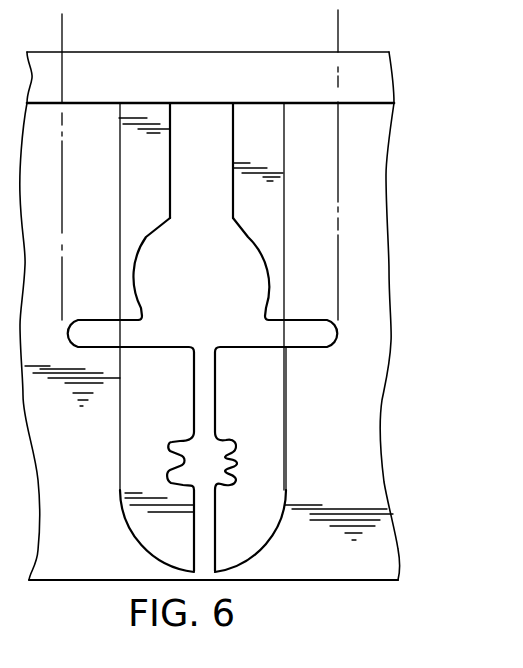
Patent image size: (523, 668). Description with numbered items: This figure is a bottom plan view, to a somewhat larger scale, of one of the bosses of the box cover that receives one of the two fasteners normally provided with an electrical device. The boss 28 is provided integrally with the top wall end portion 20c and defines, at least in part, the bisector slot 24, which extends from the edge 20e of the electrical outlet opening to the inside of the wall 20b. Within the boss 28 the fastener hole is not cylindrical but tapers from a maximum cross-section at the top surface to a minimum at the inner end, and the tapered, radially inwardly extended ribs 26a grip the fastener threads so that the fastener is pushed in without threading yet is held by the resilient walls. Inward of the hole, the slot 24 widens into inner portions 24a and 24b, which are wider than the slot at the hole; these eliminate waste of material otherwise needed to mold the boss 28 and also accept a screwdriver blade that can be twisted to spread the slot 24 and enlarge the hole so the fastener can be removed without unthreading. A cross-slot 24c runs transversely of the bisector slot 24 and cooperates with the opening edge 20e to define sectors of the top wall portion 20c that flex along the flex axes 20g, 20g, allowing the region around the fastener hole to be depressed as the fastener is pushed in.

The wall 20b is at (350, 52).
The top wall end portion 20c is at (374, 264).
The edge of the electrical outlet opening 20e is at (295, 582).
The flex axes 20g is at (63, 73).
The bisector slot 24 is at (208, 376).
The inner slot portion 24a is at (232, 128).
The inner slot portion 24b is at (157, 240).
The cross-slot 24c is at (310, 325).
The tapered ribs 26a is at (199, 440).
The boss 28 is at (287, 453).